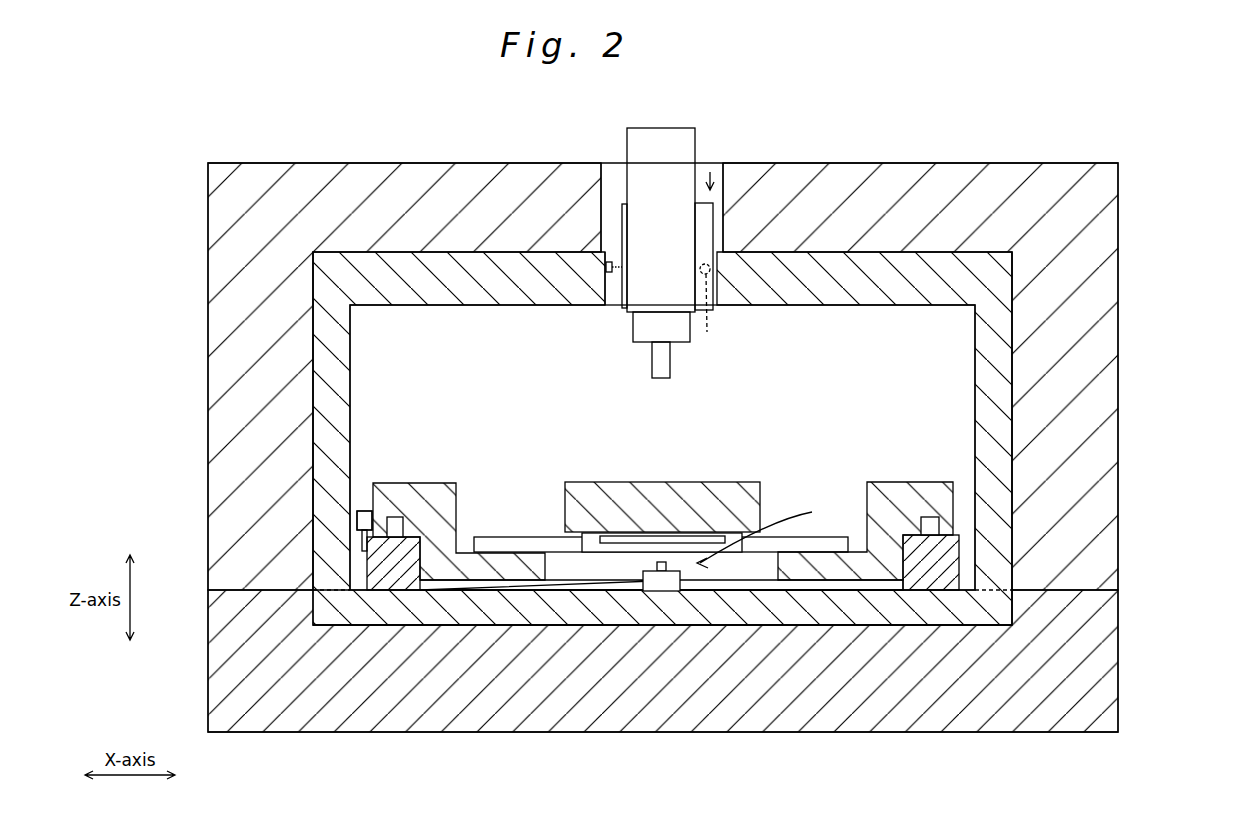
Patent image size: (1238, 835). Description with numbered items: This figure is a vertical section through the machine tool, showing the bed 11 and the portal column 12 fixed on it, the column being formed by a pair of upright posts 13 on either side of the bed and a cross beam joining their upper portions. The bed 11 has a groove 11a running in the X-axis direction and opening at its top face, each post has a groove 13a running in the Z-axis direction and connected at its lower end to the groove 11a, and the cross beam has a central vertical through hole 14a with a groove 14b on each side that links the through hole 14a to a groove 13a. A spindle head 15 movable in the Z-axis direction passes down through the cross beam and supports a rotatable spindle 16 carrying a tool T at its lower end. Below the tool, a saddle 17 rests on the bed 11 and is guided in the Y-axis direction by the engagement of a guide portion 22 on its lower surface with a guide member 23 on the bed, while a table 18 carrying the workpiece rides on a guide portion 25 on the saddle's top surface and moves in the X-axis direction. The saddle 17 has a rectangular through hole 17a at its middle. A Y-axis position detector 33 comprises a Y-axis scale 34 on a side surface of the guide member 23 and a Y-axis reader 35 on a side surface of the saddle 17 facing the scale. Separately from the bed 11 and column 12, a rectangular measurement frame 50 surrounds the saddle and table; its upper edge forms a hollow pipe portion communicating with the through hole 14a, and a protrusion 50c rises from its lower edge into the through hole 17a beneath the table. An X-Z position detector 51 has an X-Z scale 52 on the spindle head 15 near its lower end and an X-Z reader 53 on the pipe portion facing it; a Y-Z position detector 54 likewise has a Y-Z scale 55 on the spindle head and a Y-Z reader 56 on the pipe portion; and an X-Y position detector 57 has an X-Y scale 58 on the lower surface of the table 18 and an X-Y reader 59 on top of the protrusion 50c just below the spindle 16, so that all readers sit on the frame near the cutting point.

The bed 11 is at (1118, 680).
The groove 11a is at (460, 625).
The portal column 12 is at (654, 447).
The post 13 is at (1118, 305).
The groove 13a is at (327, 334).
The through hole 14a is at (603, 168).
The groove 14b is at (437, 262).
The spindle head 15 is at (668, 130).
The spindle 16 is at (679, 340).
The tool T is at (661, 378).
The saddle 17 is at (868, 484).
The through hole 17a is at (580, 592).
The table 18 is at (737, 485).
The guide portion 22 is at (398, 518).
The guide member 23 is at (397, 580).
The guide portion 25 is at (536, 538).
The Y-axis position detector 33 is at (367, 495).
The Y-axis scale 34 is at (313, 593).
The Y-axis reader 35 is at (357, 540).
The measurement frame 50 is at (835, 300).
The protrusion 50c is at (663, 592).
The X-Z position detector 51 is at (710, 172).
The X-Z scale 52 is at (712, 217).
The X-Z reader 53 is at (710, 309).
The Y-Z position detector 54 is at (612, 292).
The Y-Z scale 55 is at (620, 228).
The Y-Z reader 56 is at (605, 270).
The X-Y position detector 57 is at (760, 528).
The X-Y scale 58 is at (617, 537).
The X-Y reader 59 is at (662, 562).